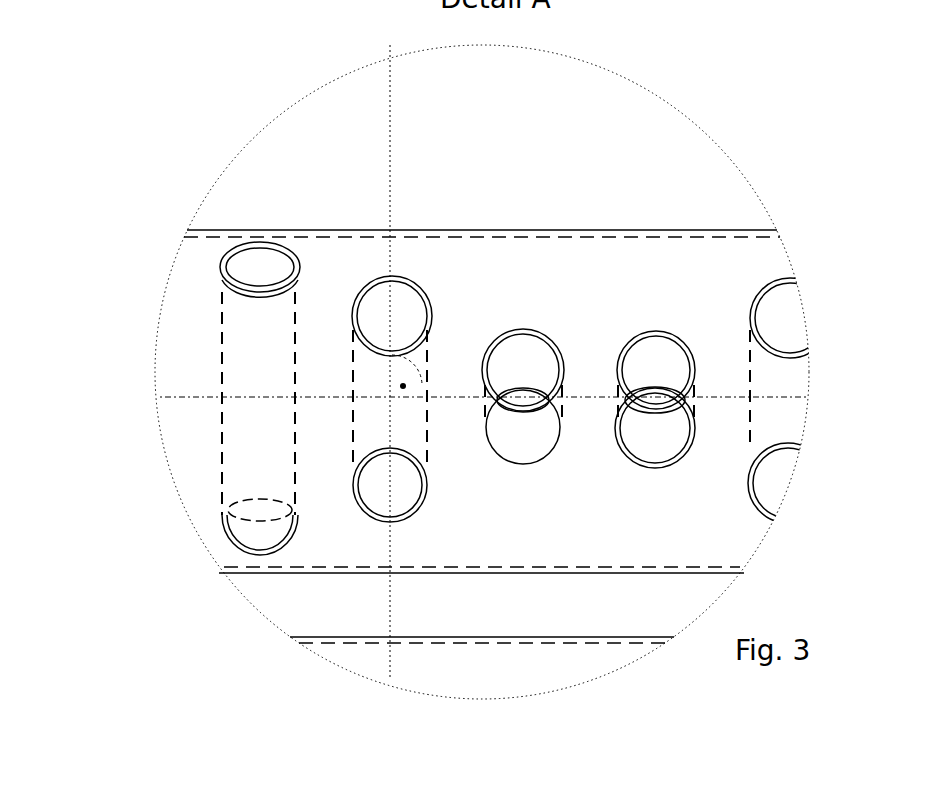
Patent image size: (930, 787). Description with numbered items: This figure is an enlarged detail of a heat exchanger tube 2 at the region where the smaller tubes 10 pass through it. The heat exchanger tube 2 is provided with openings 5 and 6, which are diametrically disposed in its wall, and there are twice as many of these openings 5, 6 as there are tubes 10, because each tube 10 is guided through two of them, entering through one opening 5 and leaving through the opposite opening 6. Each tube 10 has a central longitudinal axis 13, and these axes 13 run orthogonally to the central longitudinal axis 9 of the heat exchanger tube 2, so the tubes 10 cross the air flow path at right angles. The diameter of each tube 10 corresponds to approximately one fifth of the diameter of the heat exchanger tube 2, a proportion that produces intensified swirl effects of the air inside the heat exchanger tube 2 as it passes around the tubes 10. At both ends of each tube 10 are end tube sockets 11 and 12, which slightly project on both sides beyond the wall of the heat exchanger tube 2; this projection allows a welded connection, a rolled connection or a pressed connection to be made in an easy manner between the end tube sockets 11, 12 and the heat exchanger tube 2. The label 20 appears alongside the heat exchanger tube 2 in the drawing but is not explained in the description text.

The heat exchanger tube 2 is at (595, 295).
The plate surface 20 is at (482, 640).
The opening 5 is at (233, 282).
The opening 6 is at (257, 510).
The central longitudinal axis of heat exchanger tube 9 is at (708, 396).
The tube 10 is at (247, 412).
The end tube socket 11 is at (272, 262).
The end tube socket 12 is at (225, 535).
The central longitudinal axis of tube 13 is at (392, 175).